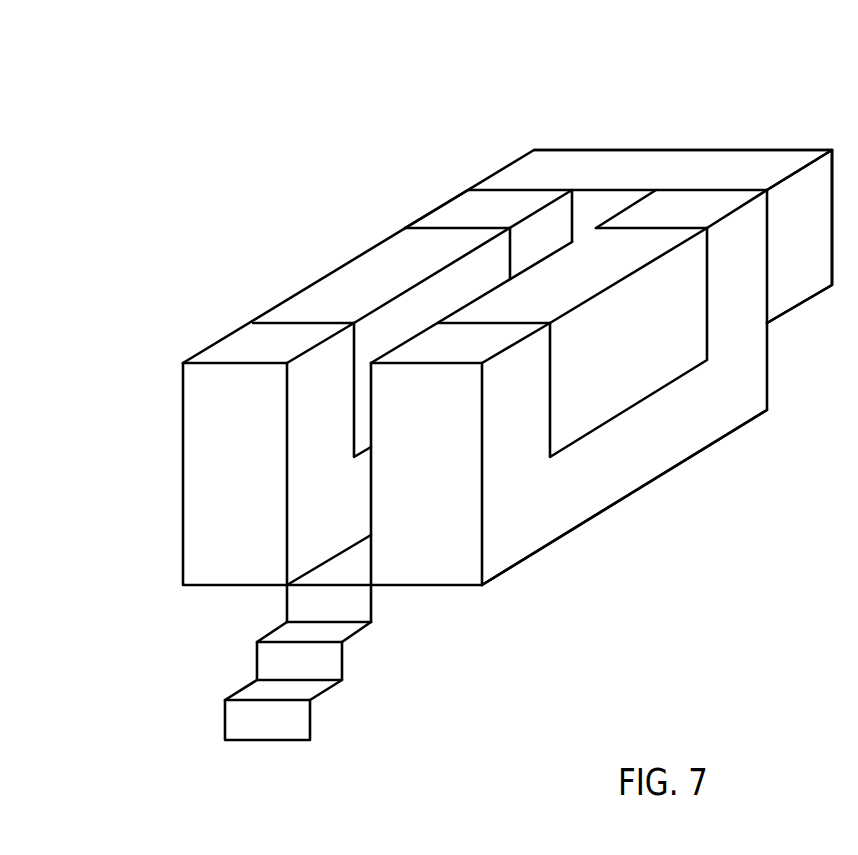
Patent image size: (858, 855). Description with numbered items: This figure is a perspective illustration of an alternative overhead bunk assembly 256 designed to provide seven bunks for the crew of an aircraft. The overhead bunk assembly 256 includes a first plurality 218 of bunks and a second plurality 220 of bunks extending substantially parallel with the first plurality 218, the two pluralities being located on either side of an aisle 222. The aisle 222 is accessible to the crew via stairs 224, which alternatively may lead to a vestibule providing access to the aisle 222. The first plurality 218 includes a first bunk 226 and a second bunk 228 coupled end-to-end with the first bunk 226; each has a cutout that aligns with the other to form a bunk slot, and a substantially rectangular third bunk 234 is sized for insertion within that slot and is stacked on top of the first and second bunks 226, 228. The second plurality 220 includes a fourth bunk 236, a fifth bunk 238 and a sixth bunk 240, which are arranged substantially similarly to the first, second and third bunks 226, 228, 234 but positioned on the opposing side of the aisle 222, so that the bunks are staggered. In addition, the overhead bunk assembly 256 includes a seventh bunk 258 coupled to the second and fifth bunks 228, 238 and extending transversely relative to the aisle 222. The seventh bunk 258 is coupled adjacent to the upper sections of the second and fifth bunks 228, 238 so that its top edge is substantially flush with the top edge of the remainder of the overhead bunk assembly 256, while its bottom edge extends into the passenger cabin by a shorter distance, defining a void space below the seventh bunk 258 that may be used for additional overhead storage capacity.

The first plurality of bunks 218 is at (148, 522).
The second plurality of bunks 220 is at (542, 577).
The aisle 222 is at (312, 543).
The stairs 224 is at (310, 722).
The first bunk 226 is at (238, 345).
The second bunk 228 is at (458, 208).
The third bunk 234 is at (357, 273).
The fourth bunk 236 is at (547, 525).
The fifth bunk 238 is at (712, 423).
The sixth bunk 240 is at (608, 380).
The overhead bunk assembly 256 is at (747, 85).
The seventh bunk 258 is at (785, 160).